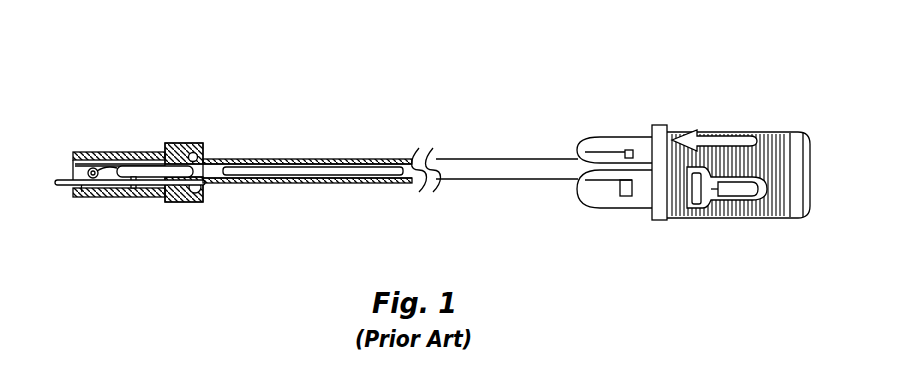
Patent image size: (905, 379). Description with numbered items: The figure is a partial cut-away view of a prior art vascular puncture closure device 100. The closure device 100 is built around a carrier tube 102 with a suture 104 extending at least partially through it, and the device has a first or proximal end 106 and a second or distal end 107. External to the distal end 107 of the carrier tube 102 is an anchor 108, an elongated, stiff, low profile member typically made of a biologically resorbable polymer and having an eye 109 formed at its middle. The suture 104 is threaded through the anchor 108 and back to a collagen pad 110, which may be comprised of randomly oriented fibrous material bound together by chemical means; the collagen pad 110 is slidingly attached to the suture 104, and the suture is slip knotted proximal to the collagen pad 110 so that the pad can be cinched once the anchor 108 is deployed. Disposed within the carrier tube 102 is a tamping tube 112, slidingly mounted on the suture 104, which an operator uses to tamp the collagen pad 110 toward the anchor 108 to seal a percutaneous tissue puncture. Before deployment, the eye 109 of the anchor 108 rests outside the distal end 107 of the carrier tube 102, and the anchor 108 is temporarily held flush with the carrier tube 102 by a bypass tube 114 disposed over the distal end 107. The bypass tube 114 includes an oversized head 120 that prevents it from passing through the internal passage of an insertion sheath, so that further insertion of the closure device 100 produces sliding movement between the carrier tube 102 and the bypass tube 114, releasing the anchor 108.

The vascular puncture closure device 100 is at (418, 110).
The carrier tube 102 is at (328, 160).
The suture 104 is at (210, 170).
The proximal end 106 is at (636, 118).
The distal end 107 is at (130, 137).
The anchor 108 is at (58, 178).
The eye 109 is at (64, 185).
The collagen pad 110 is at (147, 172).
The tamping tube 112 is at (288, 175).
The bypass tube 114 is at (133, 177).
The oversized head 120 is at (194, 205).